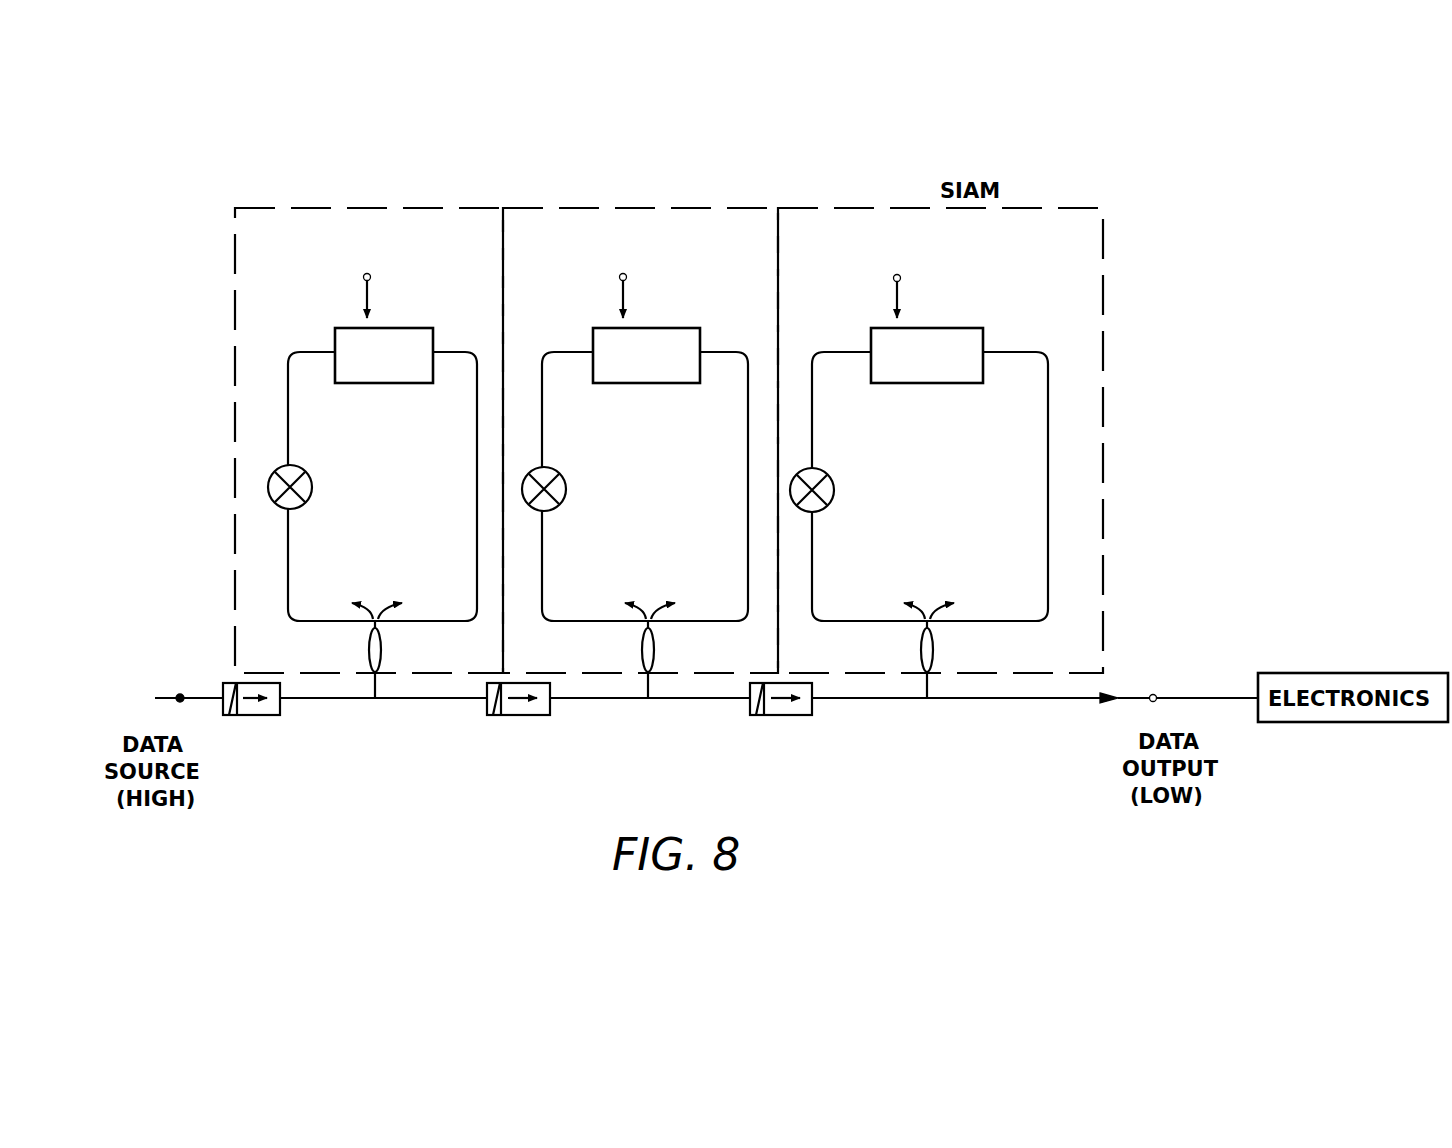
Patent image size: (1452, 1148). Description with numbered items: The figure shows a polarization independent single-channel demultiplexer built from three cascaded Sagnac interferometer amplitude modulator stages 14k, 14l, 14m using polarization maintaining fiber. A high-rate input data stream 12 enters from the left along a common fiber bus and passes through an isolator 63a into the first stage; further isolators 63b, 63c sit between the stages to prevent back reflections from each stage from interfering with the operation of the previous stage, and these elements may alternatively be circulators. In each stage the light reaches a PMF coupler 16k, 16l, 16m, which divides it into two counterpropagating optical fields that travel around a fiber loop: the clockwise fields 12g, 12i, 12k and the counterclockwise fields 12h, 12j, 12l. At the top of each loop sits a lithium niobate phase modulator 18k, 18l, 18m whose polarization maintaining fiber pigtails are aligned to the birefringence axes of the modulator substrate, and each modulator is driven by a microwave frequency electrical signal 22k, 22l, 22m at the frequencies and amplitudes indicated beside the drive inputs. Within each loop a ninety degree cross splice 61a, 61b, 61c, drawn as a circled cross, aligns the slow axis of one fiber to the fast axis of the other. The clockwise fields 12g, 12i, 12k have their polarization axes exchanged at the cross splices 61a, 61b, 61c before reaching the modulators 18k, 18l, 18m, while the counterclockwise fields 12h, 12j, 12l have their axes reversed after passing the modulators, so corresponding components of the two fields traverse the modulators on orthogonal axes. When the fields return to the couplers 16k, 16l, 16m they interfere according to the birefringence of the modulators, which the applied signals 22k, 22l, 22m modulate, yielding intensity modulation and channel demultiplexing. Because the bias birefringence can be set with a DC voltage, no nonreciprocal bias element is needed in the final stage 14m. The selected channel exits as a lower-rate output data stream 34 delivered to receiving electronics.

The input data stream light path 12 is at (182, 695).
The first stage SIAM 14k is at (401, 222).
The second stage SIAM 14l is at (610, 222).
The third stage SIAM 14m is at (850, 228).
The lithium niobate phase modulator 18k is at (335, 340).
The lithium niobate phase modulator 18l is at (593, 340).
The lithium niobate phase modulator 18m is at (871, 340).
The microwave frequency electrical signal 22k is at (364, 275).
The microwave frequency electrical signal 22l is at (620, 278).
The microwave frequency electrical signal 22m is at (894, 280).
The cross splice 61a is at (345, 500).
The cross splice 61b is at (567, 495).
The cross splice 61c is at (835, 496).
The clockwise propagating optical field 12g is at (368, 600).
The counterclockwise propagating optical field 12h is at (383, 600).
The clockwise propagating optical field 12i is at (641, 600).
The counterclockwise propagating optical field 12j is at (656, 600).
The clockwise propagating optical field 12k is at (929, 600).
The counterclockwise propagating optical field 12l is at (943, 600).
The PMF coupler 16k is at (382, 655).
The PMF coupler 16l is at (655, 655).
The PMF coupler 16m is at (934, 655).
The isolator 63a is at (257, 716).
The isolator 63b is at (514, 716).
The isolator 63c is at (785, 716).
The output data stream 34 is at (1154, 695).